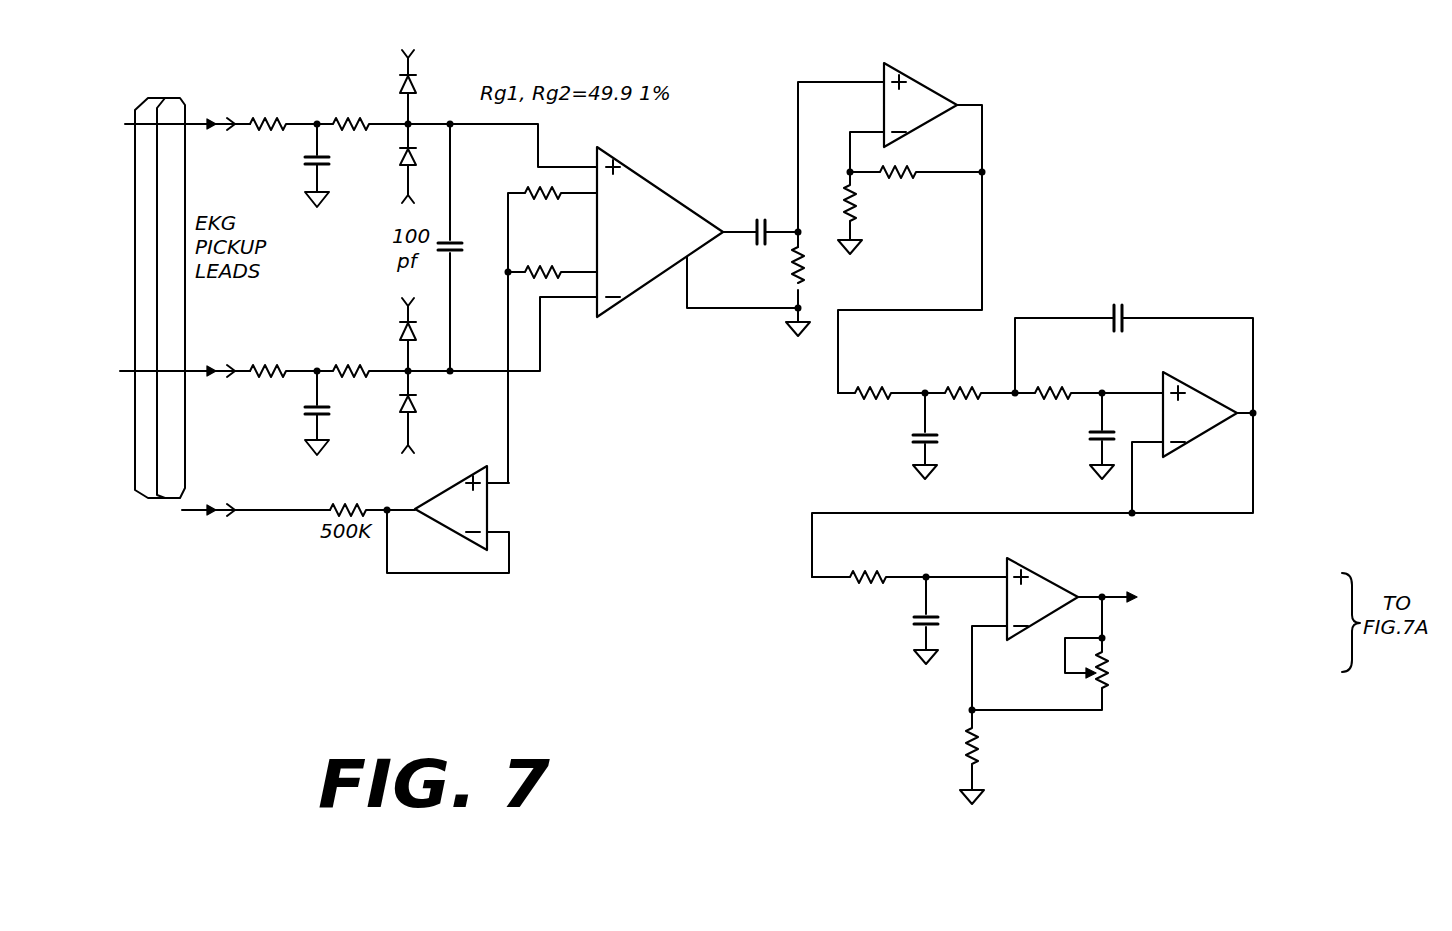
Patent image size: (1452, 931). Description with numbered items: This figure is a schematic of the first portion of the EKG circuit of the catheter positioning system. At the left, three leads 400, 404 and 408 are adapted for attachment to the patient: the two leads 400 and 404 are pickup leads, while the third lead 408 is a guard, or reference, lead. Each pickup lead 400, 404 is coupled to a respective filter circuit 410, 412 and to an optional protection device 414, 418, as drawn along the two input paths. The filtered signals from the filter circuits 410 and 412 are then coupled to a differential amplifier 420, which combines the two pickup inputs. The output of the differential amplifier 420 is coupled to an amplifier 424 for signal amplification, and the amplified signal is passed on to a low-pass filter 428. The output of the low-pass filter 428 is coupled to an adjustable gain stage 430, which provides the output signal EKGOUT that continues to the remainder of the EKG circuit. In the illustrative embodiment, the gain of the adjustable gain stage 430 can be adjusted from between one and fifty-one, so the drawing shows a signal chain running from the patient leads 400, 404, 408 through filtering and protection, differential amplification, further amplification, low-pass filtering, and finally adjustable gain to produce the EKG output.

The lead 400 is at (196, 118).
The lead 404 is at (197, 365).
The lead 408 is at (197, 505).
The filter circuit 410 is at (316, 93).
The filter circuit 412 is at (309, 350).
The protection device 414 is at (434, 100).
The protection device 418 is at (386, 340).
The differential amplifier 420 is at (664, 243).
The amplifier 424 is at (921, 92).
The low-pass filter 428 is at (1215, 366).
The adjustable gain stage 430 is at (1048, 586).